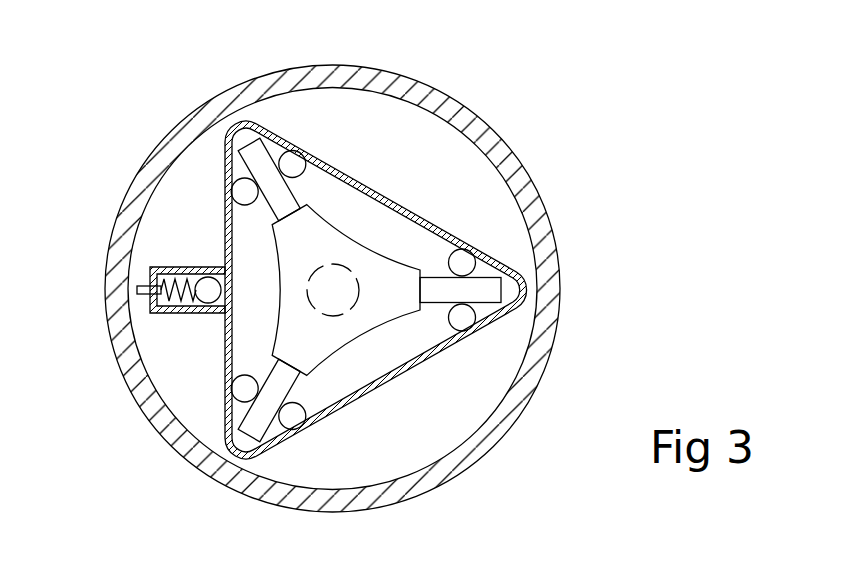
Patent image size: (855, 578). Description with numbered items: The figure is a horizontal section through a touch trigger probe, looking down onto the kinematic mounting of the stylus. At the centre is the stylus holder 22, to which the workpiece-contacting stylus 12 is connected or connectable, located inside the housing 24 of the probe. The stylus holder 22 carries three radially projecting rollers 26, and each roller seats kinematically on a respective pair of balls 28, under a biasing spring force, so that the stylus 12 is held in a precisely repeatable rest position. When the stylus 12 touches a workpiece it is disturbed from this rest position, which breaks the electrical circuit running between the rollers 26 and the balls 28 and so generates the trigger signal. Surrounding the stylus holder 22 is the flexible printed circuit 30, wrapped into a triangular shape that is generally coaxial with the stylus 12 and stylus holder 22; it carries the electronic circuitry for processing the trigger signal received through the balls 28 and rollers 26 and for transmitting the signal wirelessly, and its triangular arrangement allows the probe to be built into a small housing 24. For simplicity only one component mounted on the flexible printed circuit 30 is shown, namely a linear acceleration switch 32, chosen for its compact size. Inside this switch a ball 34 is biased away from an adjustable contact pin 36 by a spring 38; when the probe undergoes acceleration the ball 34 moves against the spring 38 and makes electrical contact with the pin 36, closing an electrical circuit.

The stylus 12 is at (333, 262).
The stylus holder 22 is at (343, 332).
The housing 24 is at (455, 100).
The rollers 26 is at (263, 145).
The balls 28 is at (237, 183).
The flexible printed circuit 30 is at (447, 225).
The linear acceleration switch 32 is at (127, 282).
The ball 34 is at (211, 278).
The adjustable contact pin 36 is at (137, 288).
The spring 38 is at (168, 266).